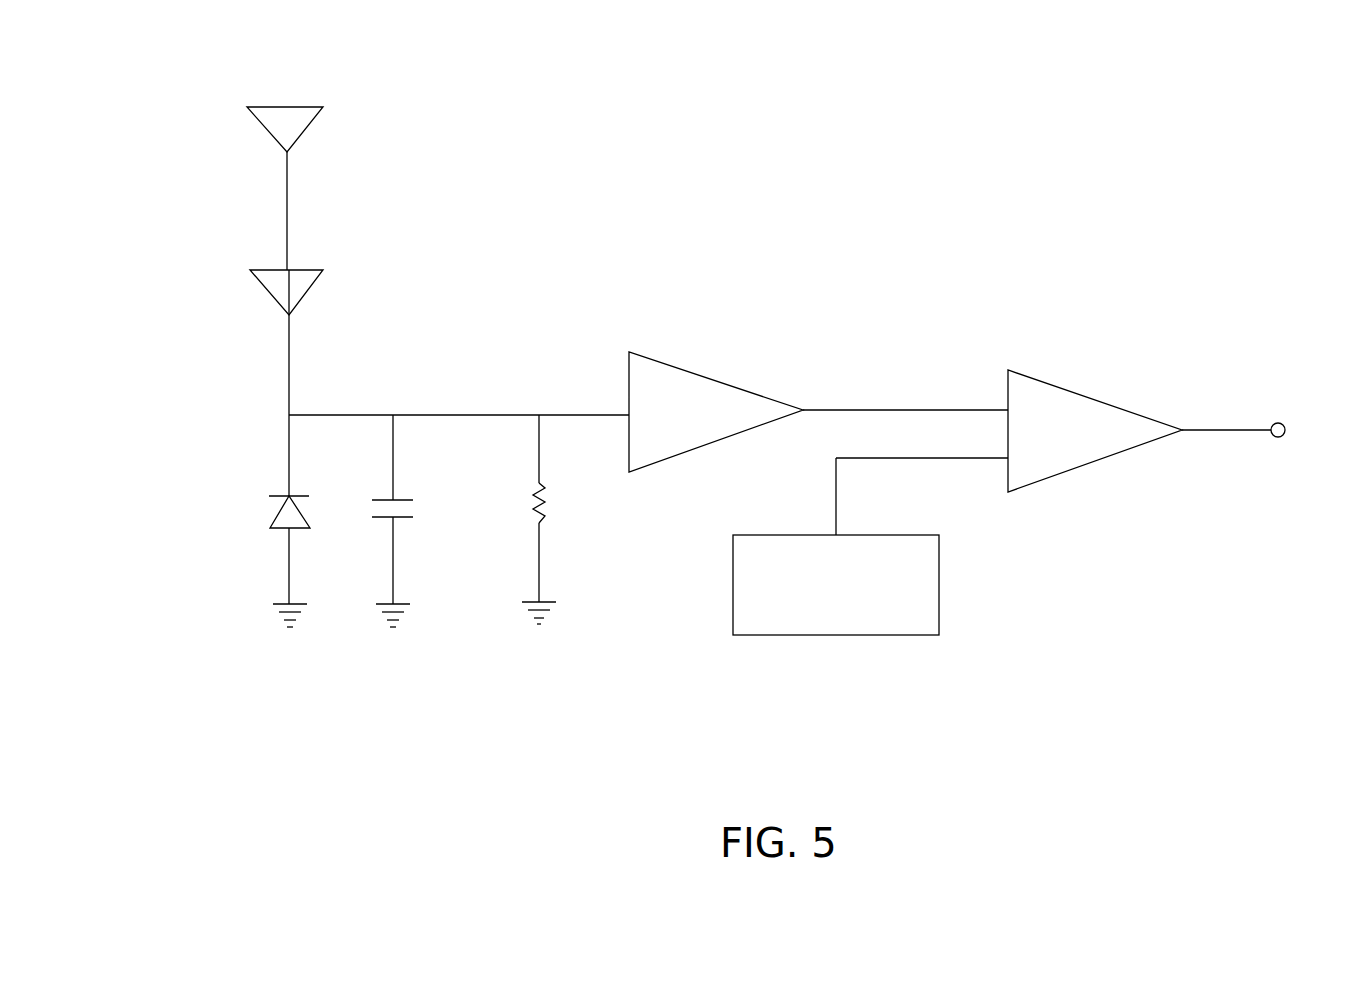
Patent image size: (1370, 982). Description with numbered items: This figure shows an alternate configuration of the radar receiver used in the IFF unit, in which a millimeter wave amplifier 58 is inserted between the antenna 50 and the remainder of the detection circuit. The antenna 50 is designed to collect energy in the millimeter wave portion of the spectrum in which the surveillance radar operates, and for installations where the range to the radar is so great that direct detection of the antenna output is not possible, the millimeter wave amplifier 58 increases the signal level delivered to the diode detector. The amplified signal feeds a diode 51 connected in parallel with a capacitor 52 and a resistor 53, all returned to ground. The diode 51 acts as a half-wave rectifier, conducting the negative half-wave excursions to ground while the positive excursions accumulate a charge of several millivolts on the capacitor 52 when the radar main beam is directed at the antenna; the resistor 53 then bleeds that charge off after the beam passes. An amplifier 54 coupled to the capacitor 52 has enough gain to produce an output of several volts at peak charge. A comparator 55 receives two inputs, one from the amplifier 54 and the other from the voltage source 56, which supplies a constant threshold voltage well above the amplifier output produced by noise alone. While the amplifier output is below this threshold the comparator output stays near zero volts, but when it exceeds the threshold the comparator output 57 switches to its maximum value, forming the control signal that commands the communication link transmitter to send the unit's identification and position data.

The antenna 50 is at (300, 106).
The millimeter wave amplifier 58 is at (300, 268).
The diode 51 is at (270, 528).
The capacitor 52 is at (381, 517).
The resistor 53 is at (538, 518).
The amplifier 54 is at (680, 368).
The comparator 55 is at (1056, 387).
The voltage source 56 is at (940, 608).
The comparator output 57 is at (1290, 423).